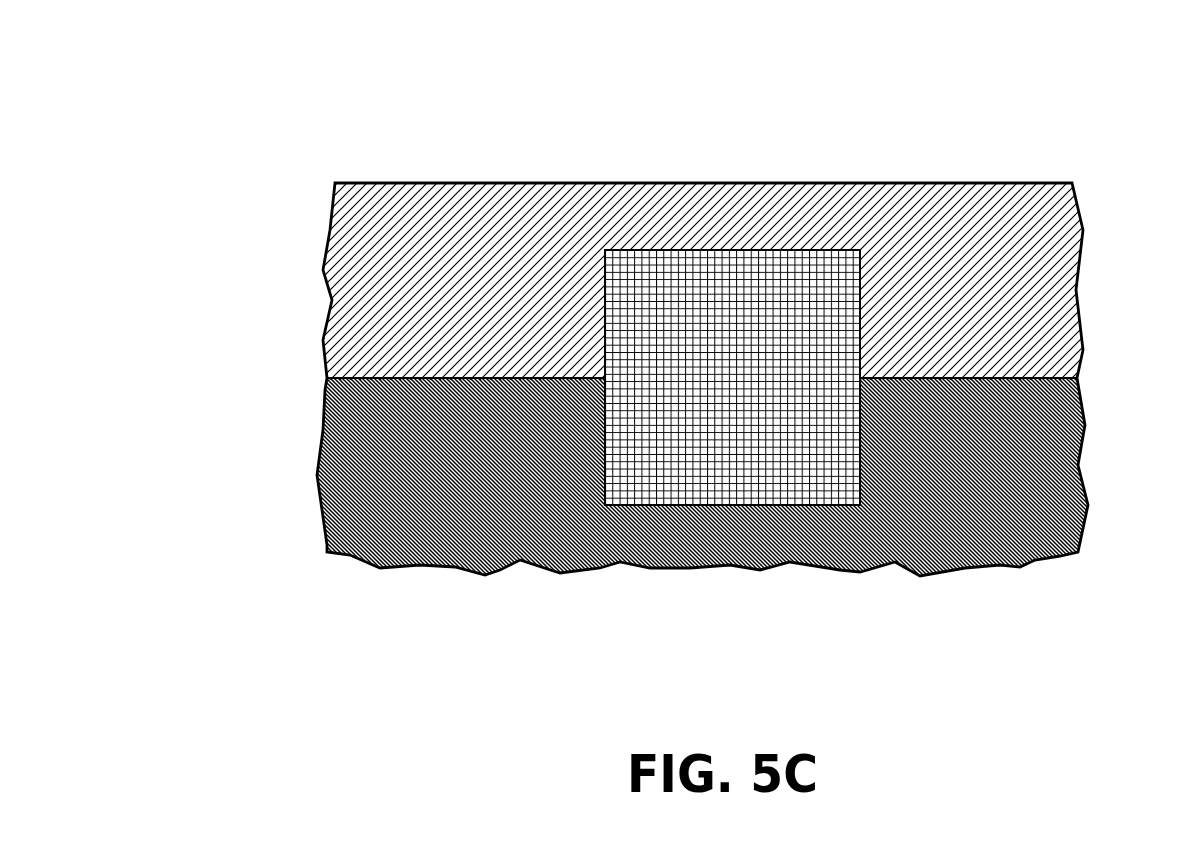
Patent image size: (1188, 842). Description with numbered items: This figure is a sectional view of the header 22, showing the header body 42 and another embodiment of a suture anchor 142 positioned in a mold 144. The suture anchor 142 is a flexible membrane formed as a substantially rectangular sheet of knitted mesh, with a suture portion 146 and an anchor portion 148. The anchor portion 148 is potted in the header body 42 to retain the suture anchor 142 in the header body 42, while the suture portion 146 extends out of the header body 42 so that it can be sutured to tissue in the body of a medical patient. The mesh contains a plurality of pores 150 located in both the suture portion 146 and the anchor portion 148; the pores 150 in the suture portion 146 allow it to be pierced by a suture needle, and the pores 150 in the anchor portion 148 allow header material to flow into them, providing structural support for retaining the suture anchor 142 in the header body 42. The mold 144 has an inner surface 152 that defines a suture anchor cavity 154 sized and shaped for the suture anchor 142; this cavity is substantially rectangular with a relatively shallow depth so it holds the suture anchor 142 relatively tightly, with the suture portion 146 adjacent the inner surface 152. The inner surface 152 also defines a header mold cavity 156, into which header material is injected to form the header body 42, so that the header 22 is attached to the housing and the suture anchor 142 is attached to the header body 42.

The header 22 is at (679, 360).
The header body 42 is at (368, 471).
The suture anchor 142 is at (844, 360).
The mold 144 is at (682, 324).
The suture portion 146 is at (730, 250).
The anchor portion 148 is at (630, 505).
The pores 150 is at (748, 250).
The inner surface 152 is at (1027, 380).
The suture anchor cavity 154 is at (860, 343).
The header mold cavity 156 is at (682, 483).